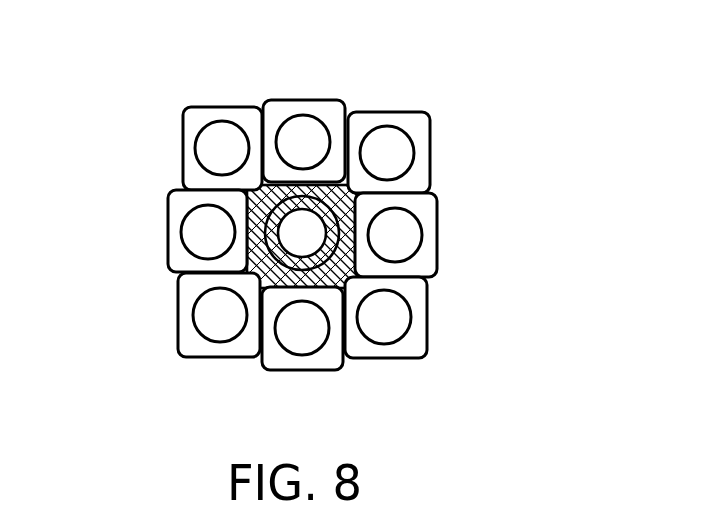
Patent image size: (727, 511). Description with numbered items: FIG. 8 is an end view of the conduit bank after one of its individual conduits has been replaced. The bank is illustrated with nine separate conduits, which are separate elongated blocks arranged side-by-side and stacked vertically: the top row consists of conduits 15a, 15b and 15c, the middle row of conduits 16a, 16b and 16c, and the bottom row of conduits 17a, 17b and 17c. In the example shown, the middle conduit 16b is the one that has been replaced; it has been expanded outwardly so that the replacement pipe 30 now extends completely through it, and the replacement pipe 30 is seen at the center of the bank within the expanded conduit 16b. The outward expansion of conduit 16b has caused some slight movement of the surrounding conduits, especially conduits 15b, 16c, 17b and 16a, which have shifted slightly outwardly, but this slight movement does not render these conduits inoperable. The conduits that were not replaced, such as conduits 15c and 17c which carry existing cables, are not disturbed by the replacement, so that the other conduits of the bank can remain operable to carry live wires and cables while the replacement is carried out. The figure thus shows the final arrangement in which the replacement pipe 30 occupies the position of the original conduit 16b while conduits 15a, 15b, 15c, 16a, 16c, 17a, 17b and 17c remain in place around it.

The conduit 15a is at (183, 143).
The conduit 15b is at (283, 100).
The conduit 15c is at (430, 136).
The conduit 16a is at (168, 218).
The conduit 16b is at (247, 242).
The conduit 16c is at (438, 213).
The conduit 17a is at (180, 337).
The conduit 17b is at (290, 370).
The conduit 17c is at (427, 313).
The replacement pipe 30 is at (308, 260).